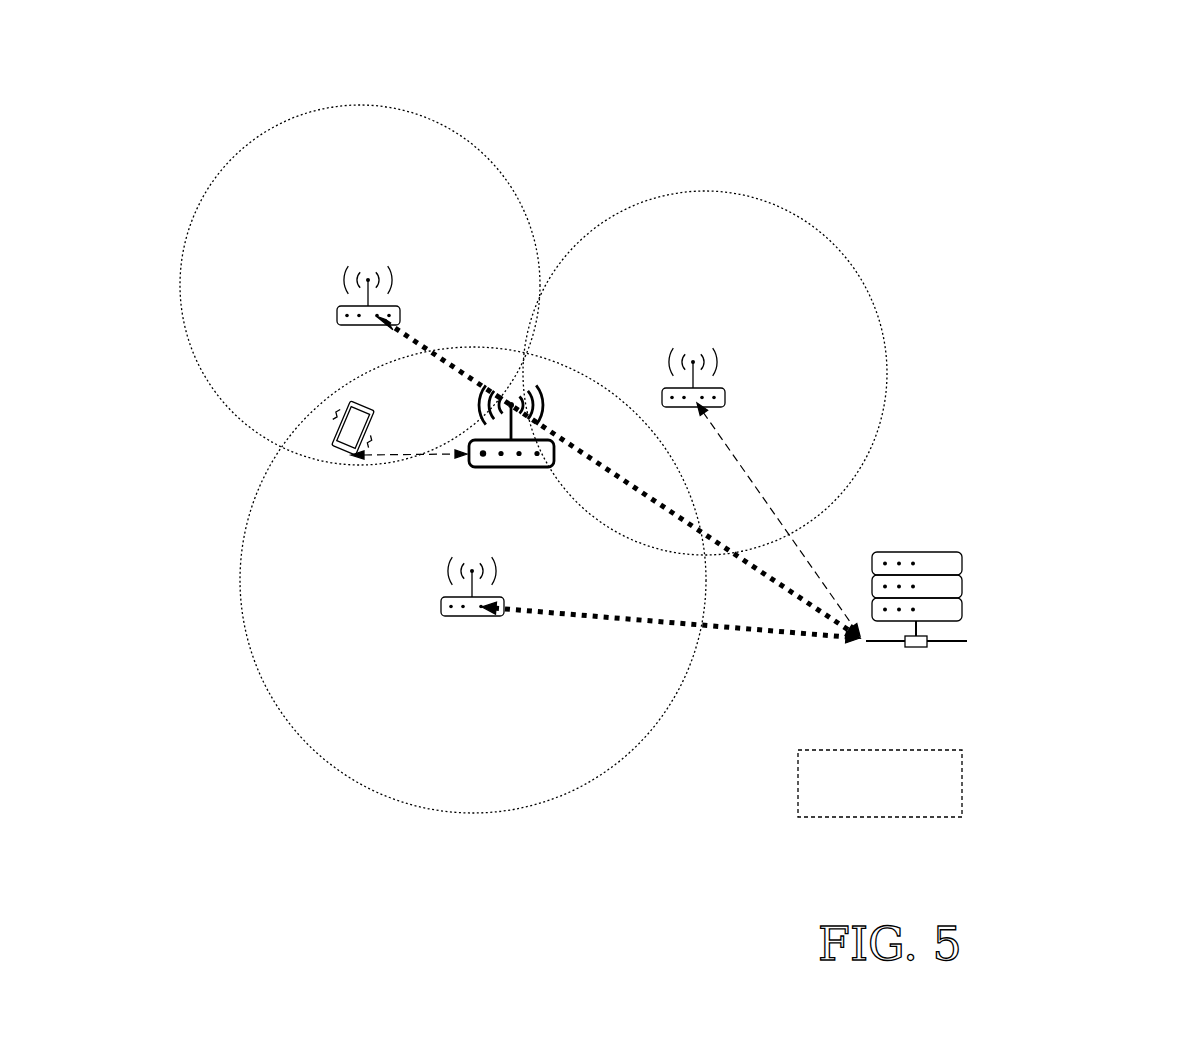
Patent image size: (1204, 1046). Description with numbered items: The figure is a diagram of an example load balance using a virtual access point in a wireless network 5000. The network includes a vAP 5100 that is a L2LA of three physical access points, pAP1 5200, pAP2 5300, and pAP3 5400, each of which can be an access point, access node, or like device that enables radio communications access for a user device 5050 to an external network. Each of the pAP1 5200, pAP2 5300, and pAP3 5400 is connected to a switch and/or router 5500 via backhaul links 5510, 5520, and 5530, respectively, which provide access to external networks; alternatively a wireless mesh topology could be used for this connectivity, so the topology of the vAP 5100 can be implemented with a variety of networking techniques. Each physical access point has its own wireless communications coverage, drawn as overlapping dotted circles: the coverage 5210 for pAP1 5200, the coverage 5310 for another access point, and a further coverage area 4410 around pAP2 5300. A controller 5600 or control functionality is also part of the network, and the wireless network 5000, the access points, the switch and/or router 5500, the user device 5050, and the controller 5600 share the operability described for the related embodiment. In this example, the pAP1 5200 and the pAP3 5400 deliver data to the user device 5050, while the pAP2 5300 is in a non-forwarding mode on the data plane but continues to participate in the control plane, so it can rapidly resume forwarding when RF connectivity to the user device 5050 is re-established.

The wireless network 5000 is at (1088, 94).
The wireless communications coverage 5210 is at (320, 112).
The coverage area of pAP2 (SSID=WorkWiFi) 4410 is at (826, 238).
The wireless communications coverage 5310 is at (385, 800).
The pAP1 5200 is at (444, 264).
The pAP2 5300 is at (769, 333).
The pAP3 5400 is at (496, 645).
The vAP 5100 is at (533, 498).
The user device 5050 is at (354, 499).
The switch and/or router 5500 is at (999, 726).
The controller 5600 is at (880, 783).
The backhaul link 5510 is at (859, 557).
The backhaul link 5520 is at (848, 486).
The backhaul link 5530 is at (755, 673).